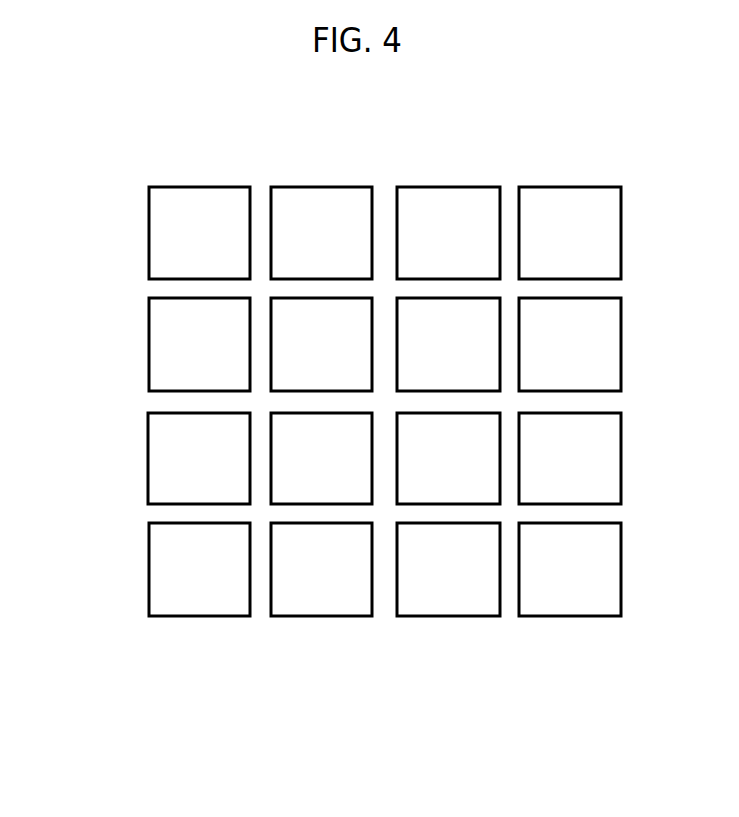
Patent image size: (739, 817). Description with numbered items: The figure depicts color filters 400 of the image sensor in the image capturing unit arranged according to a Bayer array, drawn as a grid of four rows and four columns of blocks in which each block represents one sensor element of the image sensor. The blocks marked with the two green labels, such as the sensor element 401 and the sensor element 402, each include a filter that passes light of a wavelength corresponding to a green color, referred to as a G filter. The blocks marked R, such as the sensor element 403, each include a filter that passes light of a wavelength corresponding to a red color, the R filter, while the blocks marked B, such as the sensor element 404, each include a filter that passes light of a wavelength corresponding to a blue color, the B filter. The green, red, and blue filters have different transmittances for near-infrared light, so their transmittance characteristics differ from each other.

The color filters 400 is at (355, 428).
The sensor element 401 is at (167, 233).
The sensor element 402 is at (372, 325).
The sensor element 403 is at (170, 341).
The sensor element 404 is at (317, 202).